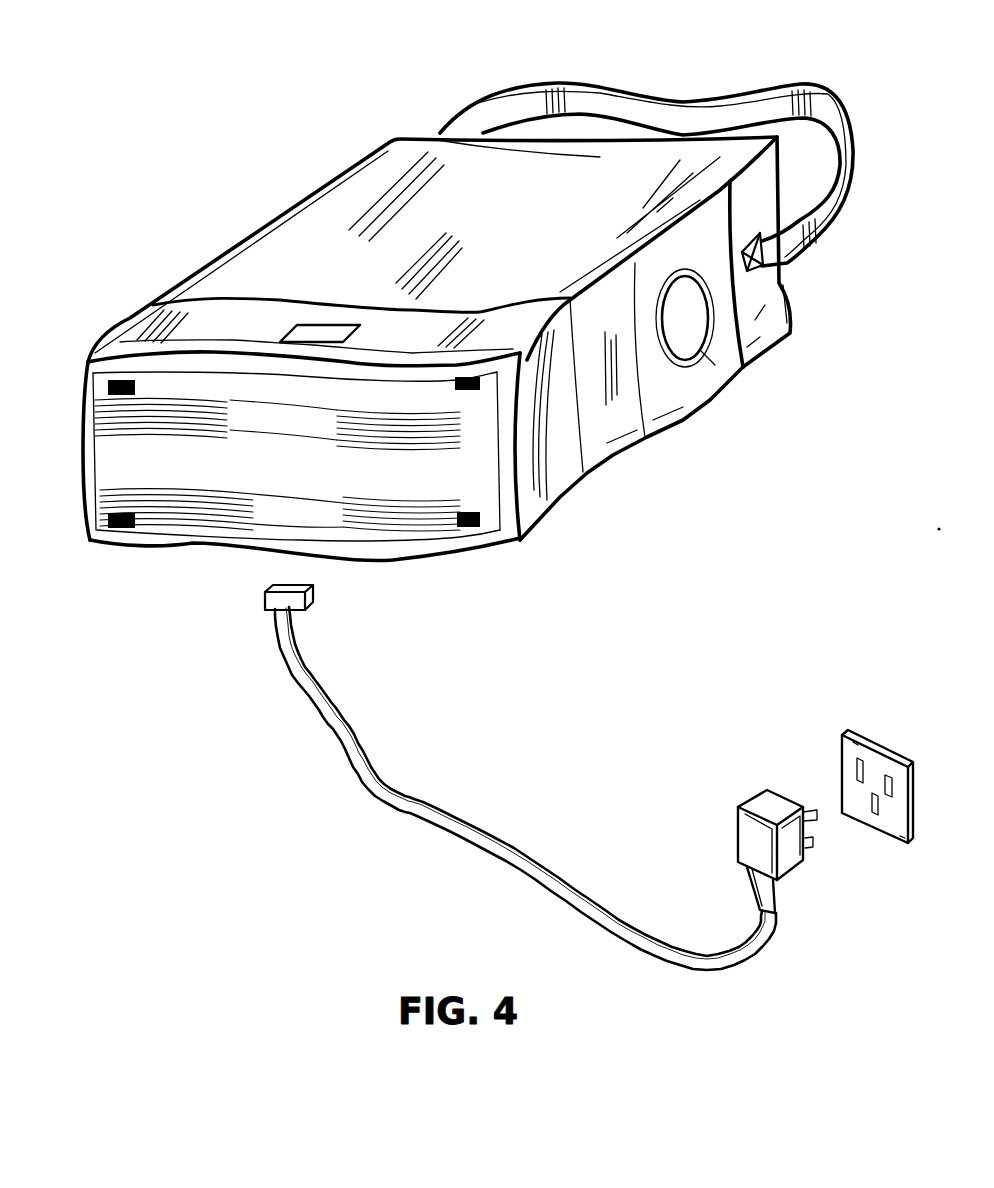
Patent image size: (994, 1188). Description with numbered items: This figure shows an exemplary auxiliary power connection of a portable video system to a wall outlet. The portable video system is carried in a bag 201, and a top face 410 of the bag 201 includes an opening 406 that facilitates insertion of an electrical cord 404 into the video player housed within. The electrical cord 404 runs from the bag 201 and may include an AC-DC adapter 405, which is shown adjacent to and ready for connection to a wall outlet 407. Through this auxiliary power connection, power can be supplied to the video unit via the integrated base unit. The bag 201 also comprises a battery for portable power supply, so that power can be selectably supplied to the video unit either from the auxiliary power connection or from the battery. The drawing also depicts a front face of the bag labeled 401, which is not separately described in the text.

The bag 201 is at (385, 162).
The top face 410 is at (350, 263).
The opening 406 is at (287, 337).
The front face 401 is at (110, 458).
The electrical cord 404 is at (320, 695).
The AC-DC adapter 405 is at (792, 857).
The wall outlet 407 is at (873, 747).